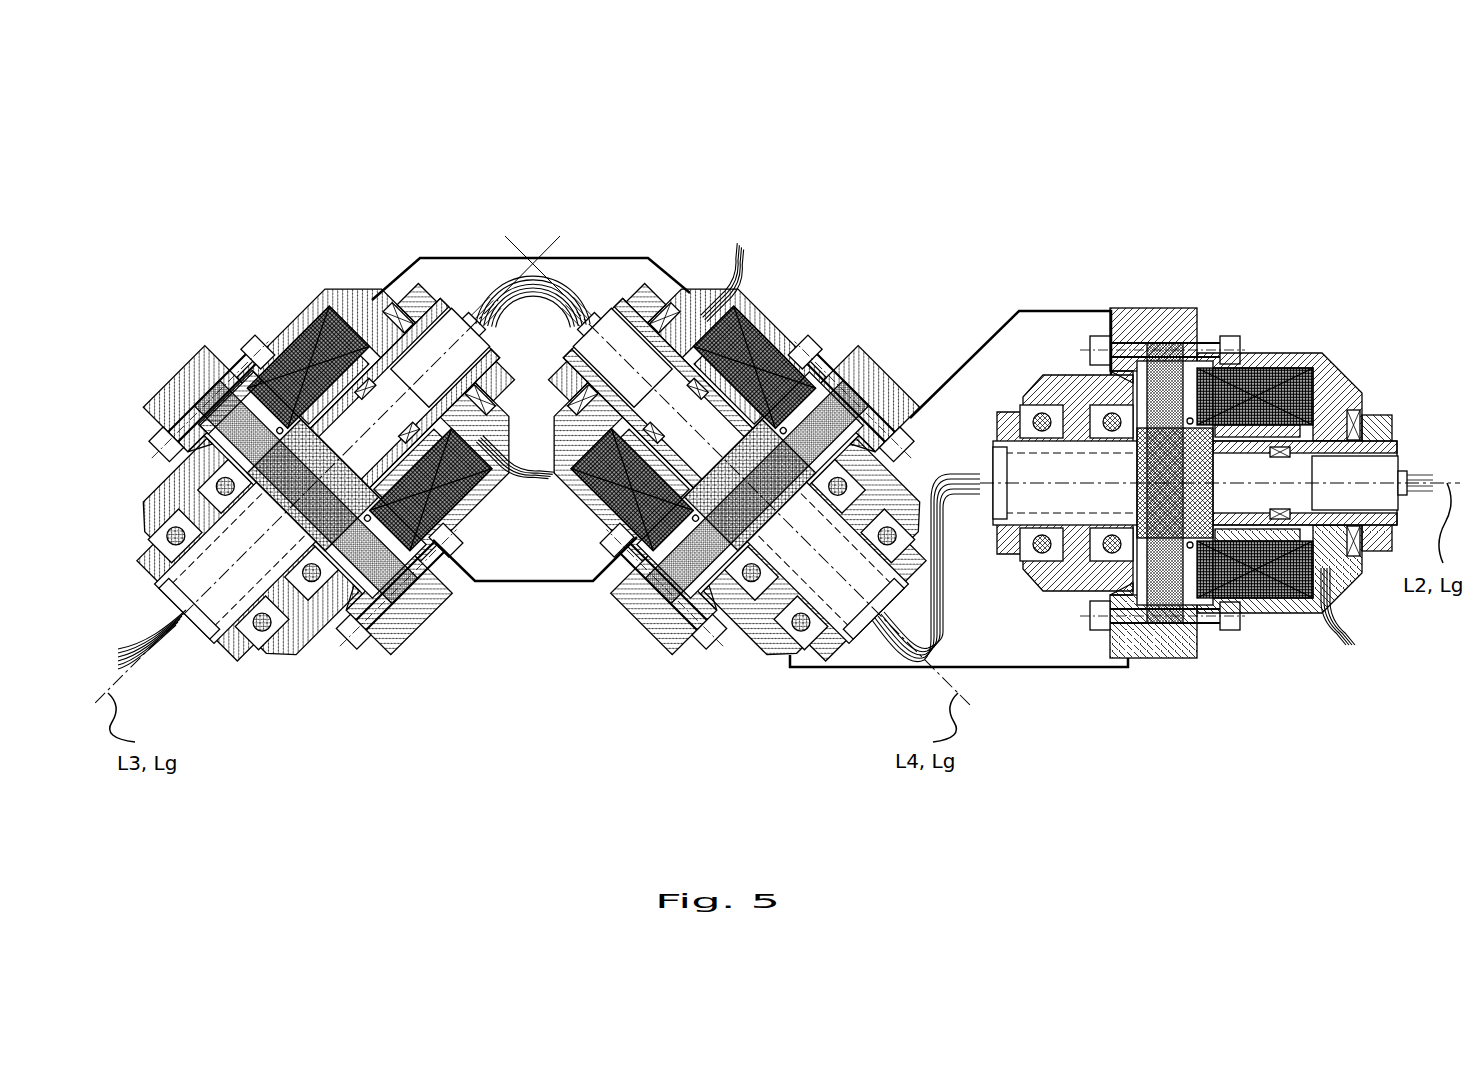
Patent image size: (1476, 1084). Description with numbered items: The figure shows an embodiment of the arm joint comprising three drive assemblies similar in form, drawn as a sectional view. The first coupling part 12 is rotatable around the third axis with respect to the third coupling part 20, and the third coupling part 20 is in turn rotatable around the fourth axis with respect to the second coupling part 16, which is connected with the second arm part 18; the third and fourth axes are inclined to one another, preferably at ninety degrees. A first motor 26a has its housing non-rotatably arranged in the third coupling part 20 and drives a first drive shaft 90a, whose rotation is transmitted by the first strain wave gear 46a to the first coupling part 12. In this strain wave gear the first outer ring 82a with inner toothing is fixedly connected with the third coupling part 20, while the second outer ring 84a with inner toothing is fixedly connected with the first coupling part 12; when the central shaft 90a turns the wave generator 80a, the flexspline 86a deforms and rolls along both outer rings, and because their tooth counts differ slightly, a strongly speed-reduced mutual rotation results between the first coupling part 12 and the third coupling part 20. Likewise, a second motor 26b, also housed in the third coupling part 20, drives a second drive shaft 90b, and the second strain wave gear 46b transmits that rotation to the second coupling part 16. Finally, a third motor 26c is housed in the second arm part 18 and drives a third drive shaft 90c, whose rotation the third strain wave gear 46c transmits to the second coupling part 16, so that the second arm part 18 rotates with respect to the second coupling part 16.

The first coupling part 12 is at (167, 410).
The second coupling part 16 is at (1132, 317).
The second arm part 18 is at (1335, 375).
The third coupling part 20 is at (693, 293).
The first motor 26a is at (300, 353).
The second motor 26b is at (767, 357).
The third motor 26c is at (1258, 383).
The first strain wave gear 46a is at (367, 577).
The second strain wave gear 46b is at (837, 390).
The third strain wave gear 46c is at (1168, 398).
The wave generator 80a is at (245, 413).
The first outer ring 82a is at (230, 407).
The second outer ring 84a is at (213, 402).
The flexspline 86a is at (388, 575).
The first drive shaft 90a is at (377, 363).
The second drive shaft 90b is at (700, 377).
The third drive shaft 90c is at (1330, 525).